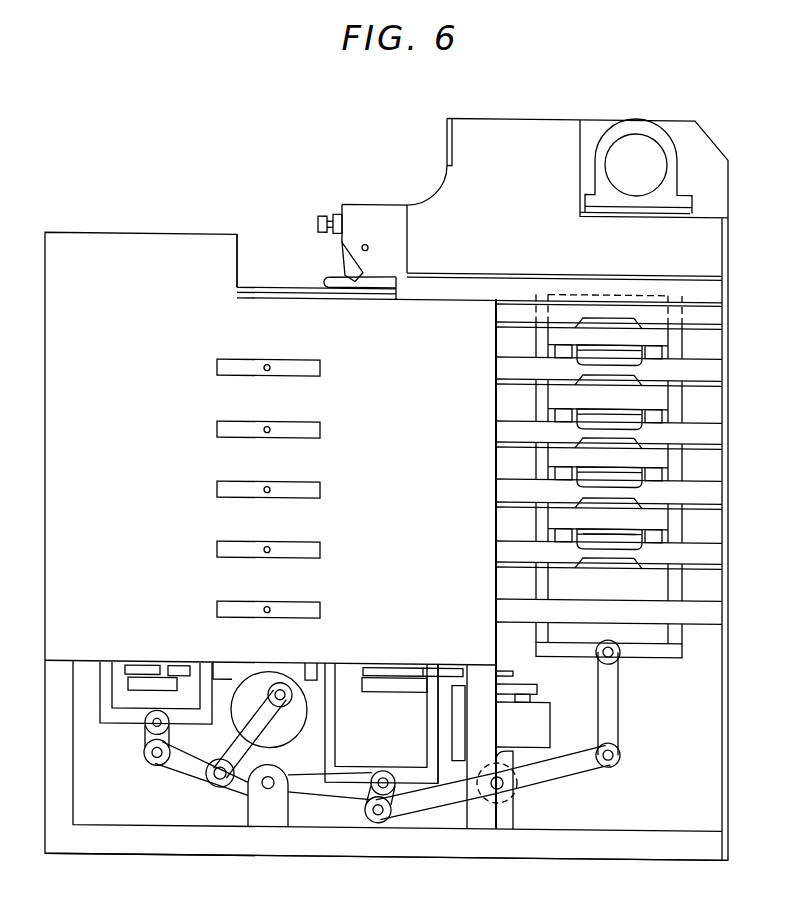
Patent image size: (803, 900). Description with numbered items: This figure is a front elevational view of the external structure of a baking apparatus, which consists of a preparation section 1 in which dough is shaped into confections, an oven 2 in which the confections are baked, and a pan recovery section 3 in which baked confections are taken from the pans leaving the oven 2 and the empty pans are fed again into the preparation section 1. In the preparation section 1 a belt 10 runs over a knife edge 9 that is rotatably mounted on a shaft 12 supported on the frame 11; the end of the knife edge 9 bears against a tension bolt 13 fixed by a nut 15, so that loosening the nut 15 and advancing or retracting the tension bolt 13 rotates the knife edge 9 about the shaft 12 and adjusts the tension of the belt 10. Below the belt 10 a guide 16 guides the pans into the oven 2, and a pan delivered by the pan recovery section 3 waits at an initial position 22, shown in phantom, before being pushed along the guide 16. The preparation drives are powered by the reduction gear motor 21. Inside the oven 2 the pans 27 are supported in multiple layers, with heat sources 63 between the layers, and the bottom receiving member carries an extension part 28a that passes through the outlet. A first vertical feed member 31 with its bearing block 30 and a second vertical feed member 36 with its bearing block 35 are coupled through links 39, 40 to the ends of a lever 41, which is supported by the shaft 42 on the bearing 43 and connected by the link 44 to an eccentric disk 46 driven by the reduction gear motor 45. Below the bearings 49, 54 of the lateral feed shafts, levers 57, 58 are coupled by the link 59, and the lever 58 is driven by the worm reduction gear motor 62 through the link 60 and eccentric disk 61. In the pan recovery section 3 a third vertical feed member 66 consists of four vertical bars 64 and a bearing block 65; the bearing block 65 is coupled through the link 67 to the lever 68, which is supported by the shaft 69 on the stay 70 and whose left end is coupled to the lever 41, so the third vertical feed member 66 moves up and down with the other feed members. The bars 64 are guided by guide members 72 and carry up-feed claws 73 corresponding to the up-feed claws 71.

The preparation section 1 is at (526, 142).
The oven 2 is at (198, 250).
The pan recovery section 3 is at (704, 465).
The knife edge 9 is at (352, 270).
The belt 10 is at (326, 283).
The frame 11 is at (484, 140).
The shaft 12 is at (366, 244).
The tension bolt 13 is at (318, 223).
The nut 15 is at (337, 215).
The guide 16 is at (246, 287).
The reduction gear motor 21 is at (635, 158).
The initial position 22 is at (622, 293).
The pan 27 is at (600, 526).
The extension part 28a is at (545, 576).
The bearing block 30 is at (108, 715).
The first vertical feed member 31 is at (80, 689).
The bearing block 35 is at (358, 776).
The second vertical feed member 36 is at (346, 725).
The link 39 is at (148, 743).
The link 40 is at (382, 822).
The lever 41 is at (185, 764).
The shaft 42 is at (264, 792).
The bearing 43 is at (280, 819).
The link 44 is at (215, 787).
The reduction gear motor 45 is at (297, 706).
The eccentric disk 46 is at (282, 722).
The bearing 49 is at (147, 670).
The bearing 54 is at (400, 668).
The lever 57 is at (170, 681).
The lever 58 is at (403, 692).
The link 59 is at (348, 668).
The link 60 is at (453, 672).
The eccentric disk 61 is at (525, 679).
The worm reduction gear motor 62 is at (552, 718).
The heat source 63 is at (322, 366).
The vertical bar 64 is at (537, 403).
The bearing block 65 is at (657, 652).
The third vertical feed member 66 is at (702, 405).
The link 67 is at (612, 713).
The lever 68 is at (590, 771).
The shaft 69 is at (498, 790).
The stay 70 is at (483, 822).
The up-feed claw 71 is at (706, 540).
The guide member 72 is at (708, 550).
The up-feed claw 73 is at (640, 547).